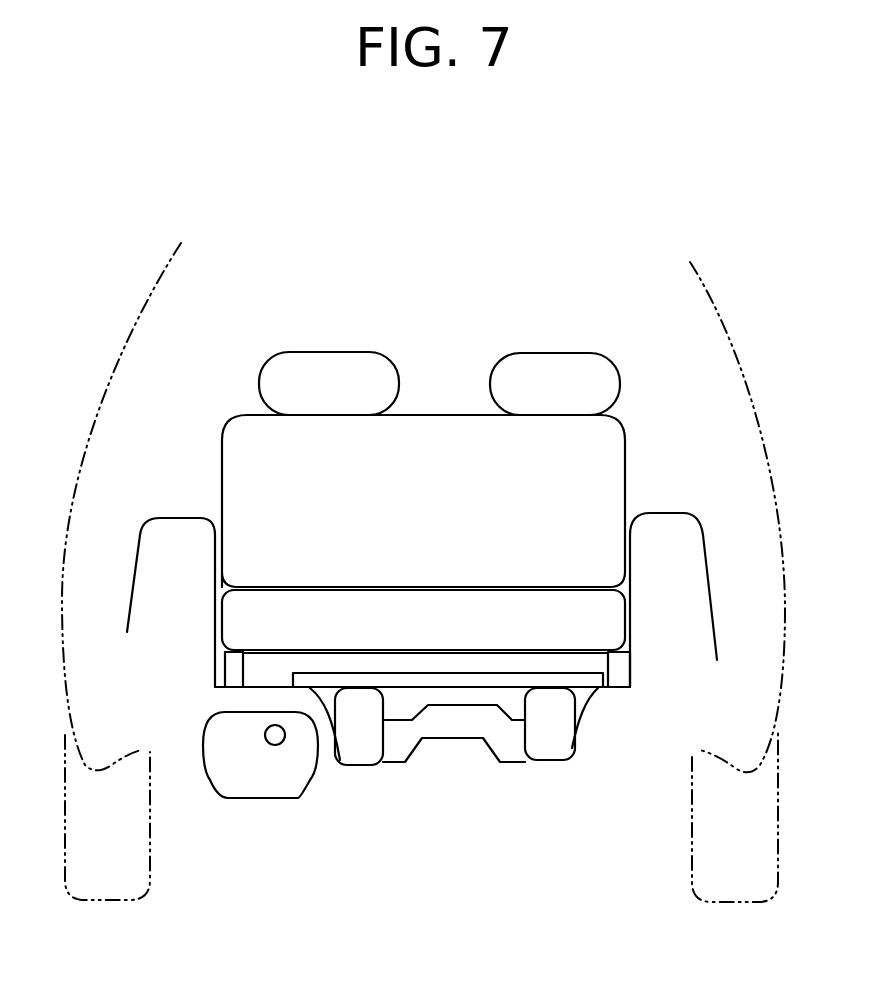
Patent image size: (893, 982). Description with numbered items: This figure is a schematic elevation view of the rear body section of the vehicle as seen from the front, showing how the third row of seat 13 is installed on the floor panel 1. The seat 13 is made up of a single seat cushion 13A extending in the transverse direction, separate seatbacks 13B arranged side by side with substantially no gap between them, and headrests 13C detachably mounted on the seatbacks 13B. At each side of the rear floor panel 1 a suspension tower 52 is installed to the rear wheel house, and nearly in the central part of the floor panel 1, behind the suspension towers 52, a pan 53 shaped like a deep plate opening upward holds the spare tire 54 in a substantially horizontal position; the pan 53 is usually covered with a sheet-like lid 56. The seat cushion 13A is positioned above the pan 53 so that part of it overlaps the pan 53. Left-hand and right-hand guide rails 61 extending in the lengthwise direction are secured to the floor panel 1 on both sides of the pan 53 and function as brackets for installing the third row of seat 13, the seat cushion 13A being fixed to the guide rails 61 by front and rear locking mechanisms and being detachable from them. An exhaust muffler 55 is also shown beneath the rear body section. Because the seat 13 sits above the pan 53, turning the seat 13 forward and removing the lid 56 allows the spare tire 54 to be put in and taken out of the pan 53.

The floor panel 1 is at (270, 687).
The third row of seat 13 is at (455, 372).
The seat cushion 13A is at (495, 620).
The seatback 13B is at (588, 450).
The headrest 13C is at (334, 378).
The suspension tower 52 is at (176, 535).
The pan 53 is at (498, 735).
The spare tire 54 is at (562, 733).
The exhaust muffler 55 is at (262, 775).
The lid 56 is at (458, 666).
The guide rails 61 is at (232, 672).